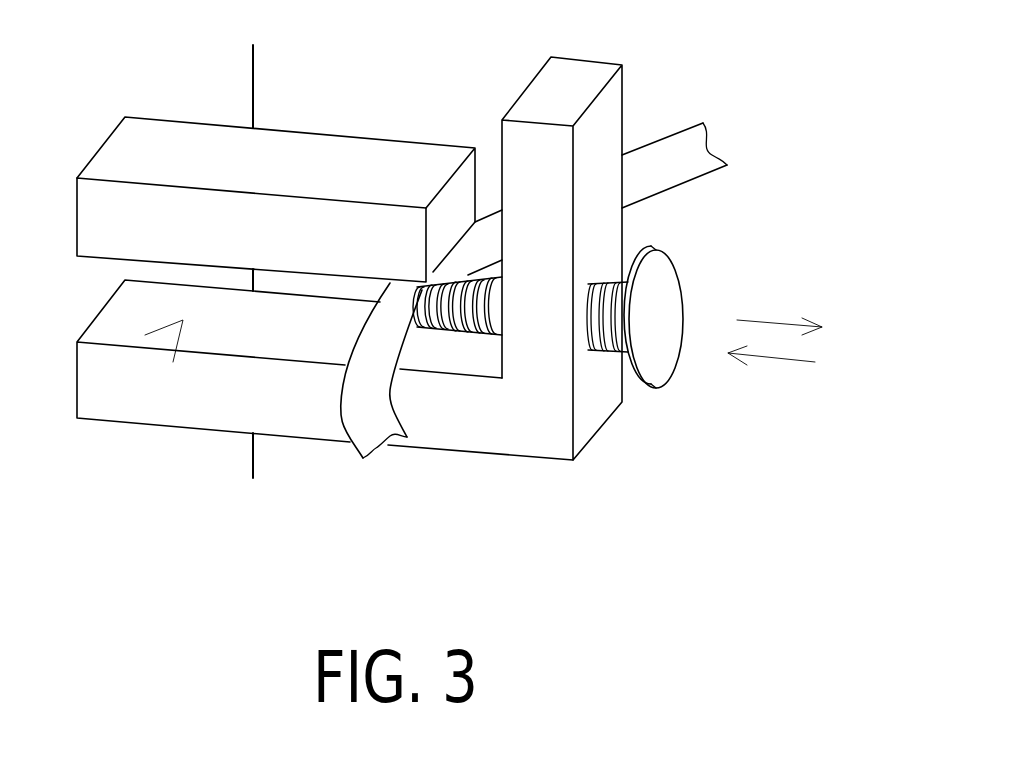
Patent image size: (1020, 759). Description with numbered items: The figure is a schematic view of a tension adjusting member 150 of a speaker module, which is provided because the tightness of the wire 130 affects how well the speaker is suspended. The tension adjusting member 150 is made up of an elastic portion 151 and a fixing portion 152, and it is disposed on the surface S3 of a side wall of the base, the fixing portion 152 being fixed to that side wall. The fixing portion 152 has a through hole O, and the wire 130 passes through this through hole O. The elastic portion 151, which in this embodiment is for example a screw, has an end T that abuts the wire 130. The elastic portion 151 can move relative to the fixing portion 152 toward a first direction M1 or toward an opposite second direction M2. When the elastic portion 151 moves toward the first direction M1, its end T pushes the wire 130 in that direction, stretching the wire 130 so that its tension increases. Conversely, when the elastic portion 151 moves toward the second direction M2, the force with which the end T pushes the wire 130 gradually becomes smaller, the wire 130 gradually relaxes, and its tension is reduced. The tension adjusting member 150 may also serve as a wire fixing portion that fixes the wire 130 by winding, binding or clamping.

The tension adjusting member 150 is at (380, 329).
The elastic portion 151 is at (655, 355).
The fixing portion 152 is at (155, 145).
The wire 130 is at (655, 158).
The end T is at (417, 308).
The surface S3 is at (217, 95).
The through hole O is at (183, 320).
The first direction M1 is at (750, 352).
The second direction M2 is at (805, 330).